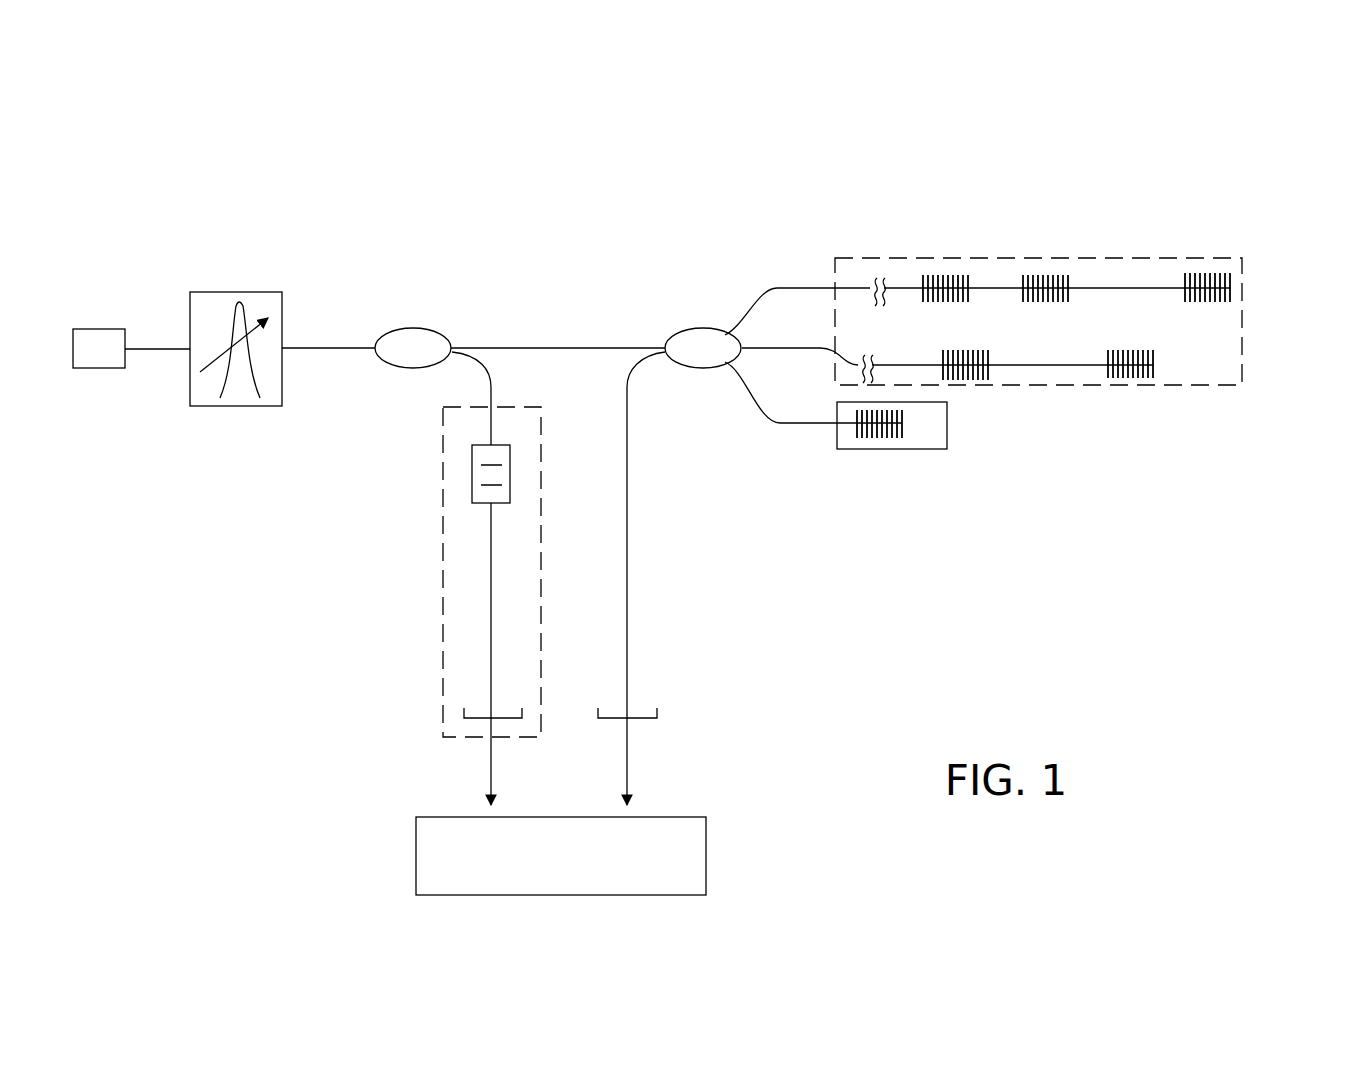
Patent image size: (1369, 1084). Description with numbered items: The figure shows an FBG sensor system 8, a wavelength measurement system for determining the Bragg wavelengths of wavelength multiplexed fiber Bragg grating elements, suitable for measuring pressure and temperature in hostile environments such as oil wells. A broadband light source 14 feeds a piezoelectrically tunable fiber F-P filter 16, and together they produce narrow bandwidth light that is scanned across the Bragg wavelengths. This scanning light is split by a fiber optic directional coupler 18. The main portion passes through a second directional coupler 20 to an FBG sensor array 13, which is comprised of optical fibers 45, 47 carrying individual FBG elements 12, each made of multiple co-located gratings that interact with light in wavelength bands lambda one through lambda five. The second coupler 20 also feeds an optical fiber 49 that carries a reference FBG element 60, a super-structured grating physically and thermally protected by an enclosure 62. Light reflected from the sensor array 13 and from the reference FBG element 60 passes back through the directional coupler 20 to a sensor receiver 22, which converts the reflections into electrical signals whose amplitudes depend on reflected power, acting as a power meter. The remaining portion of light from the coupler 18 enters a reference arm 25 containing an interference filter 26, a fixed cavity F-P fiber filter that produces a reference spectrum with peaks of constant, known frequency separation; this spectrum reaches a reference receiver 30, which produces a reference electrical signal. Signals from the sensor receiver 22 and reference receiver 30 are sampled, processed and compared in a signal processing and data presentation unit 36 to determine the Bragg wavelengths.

The FBG sensor system 8 is at (462, 168).
The FBG elements 12 is at (1023, 283).
The FBG sensor array 13 is at (1243, 292).
The broadband light source 14 is at (97, 329).
The piezoelectrically tunable fiber F-P filter 16 is at (236, 292).
The fiber optic directional coupler 18 is at (413, 328).
The second directional coupler 20 is at (683, 330).
The sensor receiver 22 is at (657, 712).
The reference arm 25 is at (443, 440).
The interference filter 26 is at (472, 475).
The reference receiver 30 is at (464, 712).
The signal processing and data presentation unit 36 is at (416, 855).
The optical fiber 45 is at (802, 288).
The optical fiber 47 is at (790, 350).
The optical fiber 49 is at (795, 428).
The reference FBG element 60 is at (855, 440).
The enclosure 62 is at (885, 452).